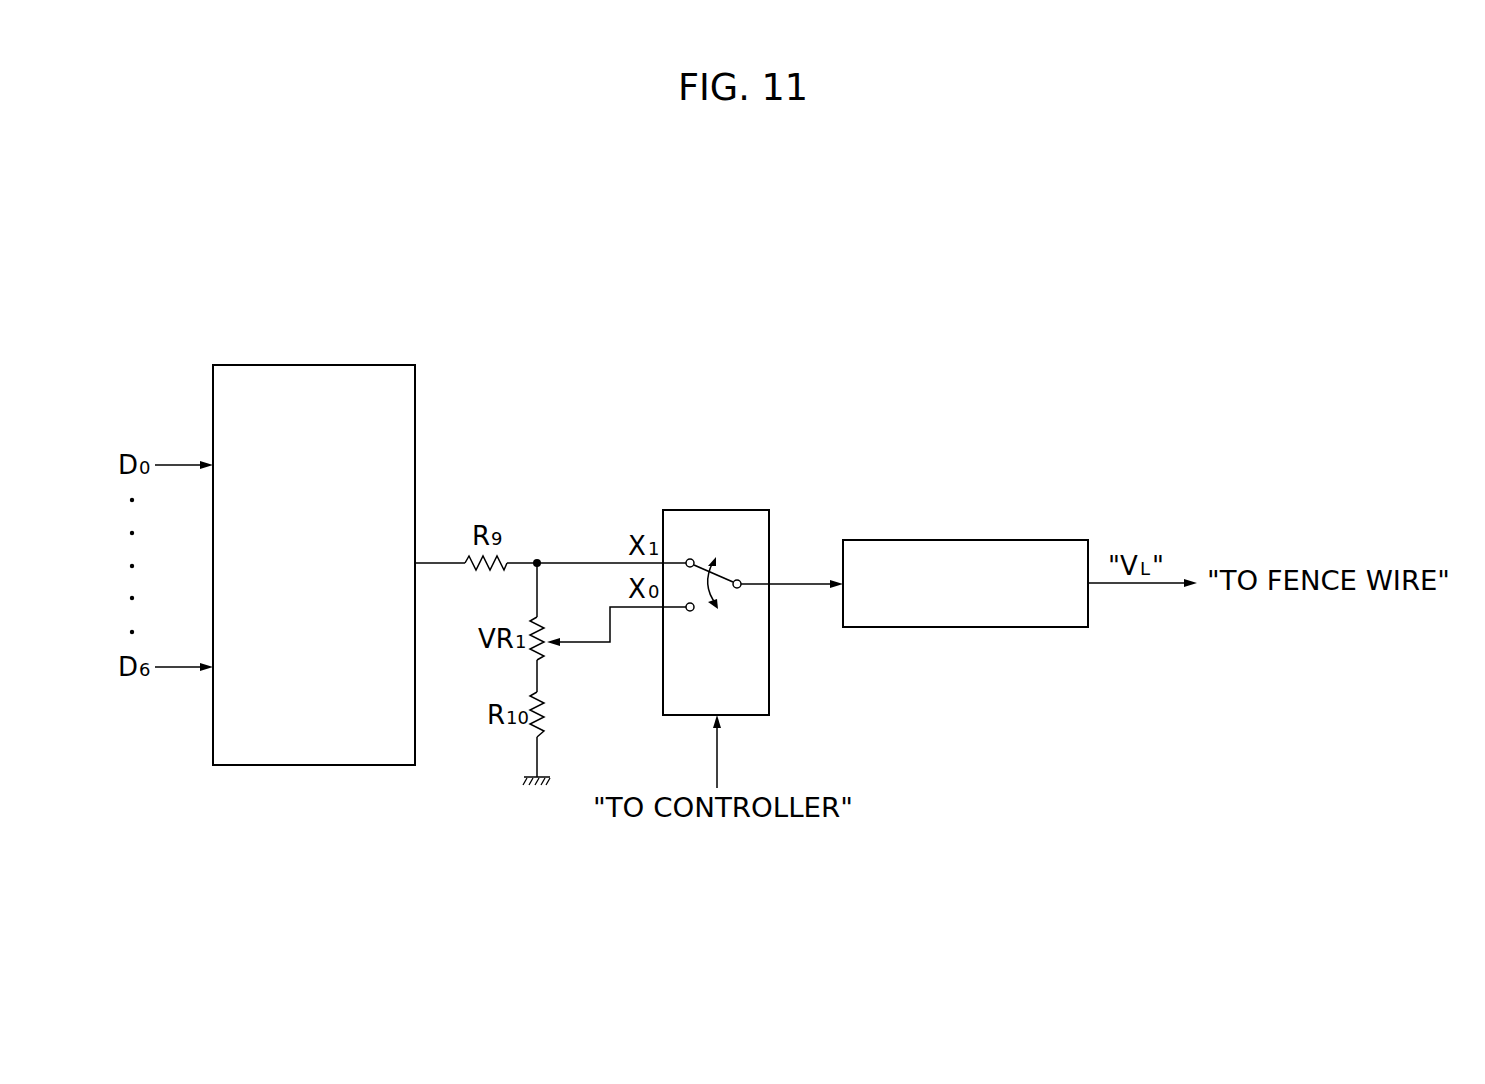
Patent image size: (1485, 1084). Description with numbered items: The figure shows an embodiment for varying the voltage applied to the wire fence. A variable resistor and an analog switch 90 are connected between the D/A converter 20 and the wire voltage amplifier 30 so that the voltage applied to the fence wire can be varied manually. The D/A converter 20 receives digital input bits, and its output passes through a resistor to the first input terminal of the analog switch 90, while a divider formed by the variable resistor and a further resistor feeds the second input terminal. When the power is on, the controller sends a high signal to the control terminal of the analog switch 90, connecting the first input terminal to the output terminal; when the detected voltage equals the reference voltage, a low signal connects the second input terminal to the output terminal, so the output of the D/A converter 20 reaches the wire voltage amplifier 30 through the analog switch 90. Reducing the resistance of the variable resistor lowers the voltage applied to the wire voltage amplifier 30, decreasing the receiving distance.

The D/A converter 20 is at (383, 365).
The analog switch 90 is at (745, 510).
The wire voltage amplifier 30 is at (1052, 540).